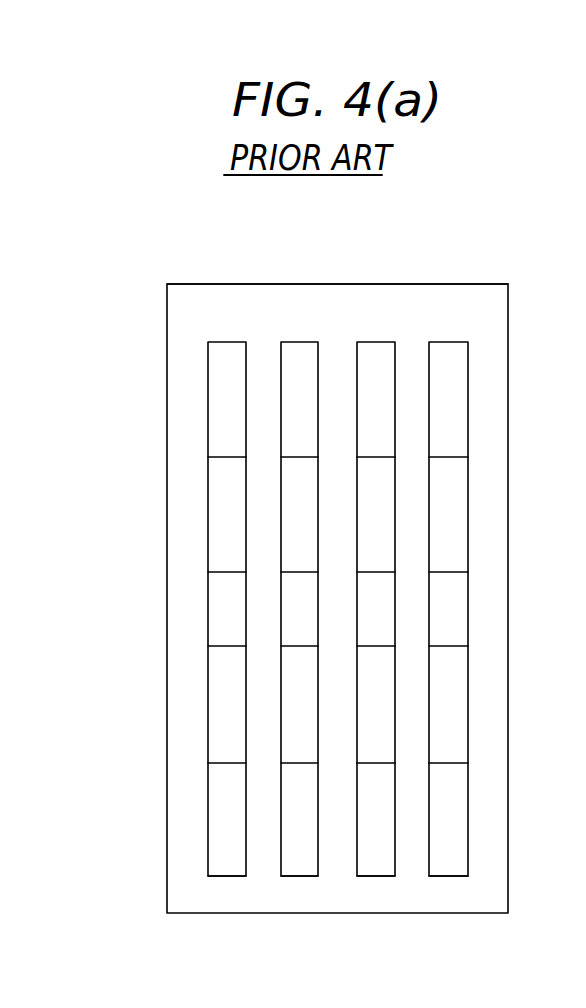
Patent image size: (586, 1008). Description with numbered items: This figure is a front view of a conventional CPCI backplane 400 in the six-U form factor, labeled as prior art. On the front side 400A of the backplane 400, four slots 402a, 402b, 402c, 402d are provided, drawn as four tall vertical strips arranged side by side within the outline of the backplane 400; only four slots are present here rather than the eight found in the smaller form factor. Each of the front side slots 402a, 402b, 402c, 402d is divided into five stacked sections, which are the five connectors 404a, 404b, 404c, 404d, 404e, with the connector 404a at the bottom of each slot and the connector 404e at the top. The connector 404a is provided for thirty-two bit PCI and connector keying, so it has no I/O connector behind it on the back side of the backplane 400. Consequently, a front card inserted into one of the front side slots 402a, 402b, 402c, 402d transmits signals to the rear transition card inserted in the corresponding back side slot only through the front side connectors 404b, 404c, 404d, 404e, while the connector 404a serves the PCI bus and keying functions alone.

The backplane 400 is at (240, 284).
The front side 400A is at (359, 284).
The slot 402a is at (227, 341).
The slot 402b is at (299, 341).
The slot 402c is at (377, 341).
The slot 402d is at (449, 341).
The connector 404a is at (212, 846).
The connector 404b is at (212, 729).
The connector 404c is at (291, 628).
The connector 404d is at (210, 540).
The connector 404e is at (212, 424).